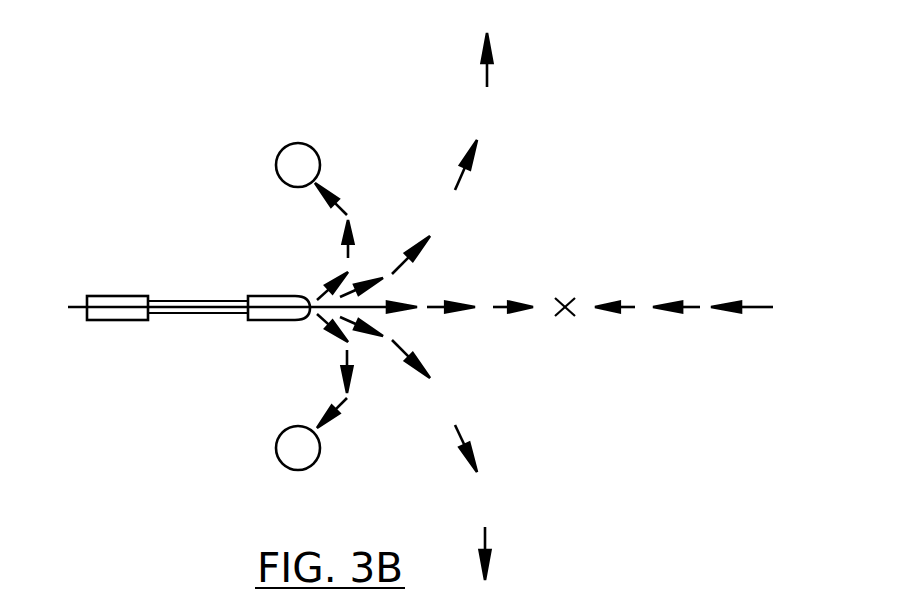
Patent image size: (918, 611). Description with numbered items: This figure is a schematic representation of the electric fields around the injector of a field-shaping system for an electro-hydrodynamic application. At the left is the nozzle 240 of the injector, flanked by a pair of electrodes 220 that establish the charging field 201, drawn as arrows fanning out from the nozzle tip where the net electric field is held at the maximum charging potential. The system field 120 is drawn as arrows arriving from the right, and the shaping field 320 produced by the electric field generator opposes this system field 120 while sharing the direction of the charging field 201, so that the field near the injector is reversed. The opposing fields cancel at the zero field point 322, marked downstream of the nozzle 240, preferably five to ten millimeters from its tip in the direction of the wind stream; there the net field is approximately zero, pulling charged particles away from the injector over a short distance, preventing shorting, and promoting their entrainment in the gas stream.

The nozzle 240 is at (100, 295).
The electrode 220 is at (296, 143).
The charging field 201 is at (349, 264).
The shaping field 320 is at (485, 73).
The zero field point 322 is at (565, 315).
The system field 120 is at (760, 305).